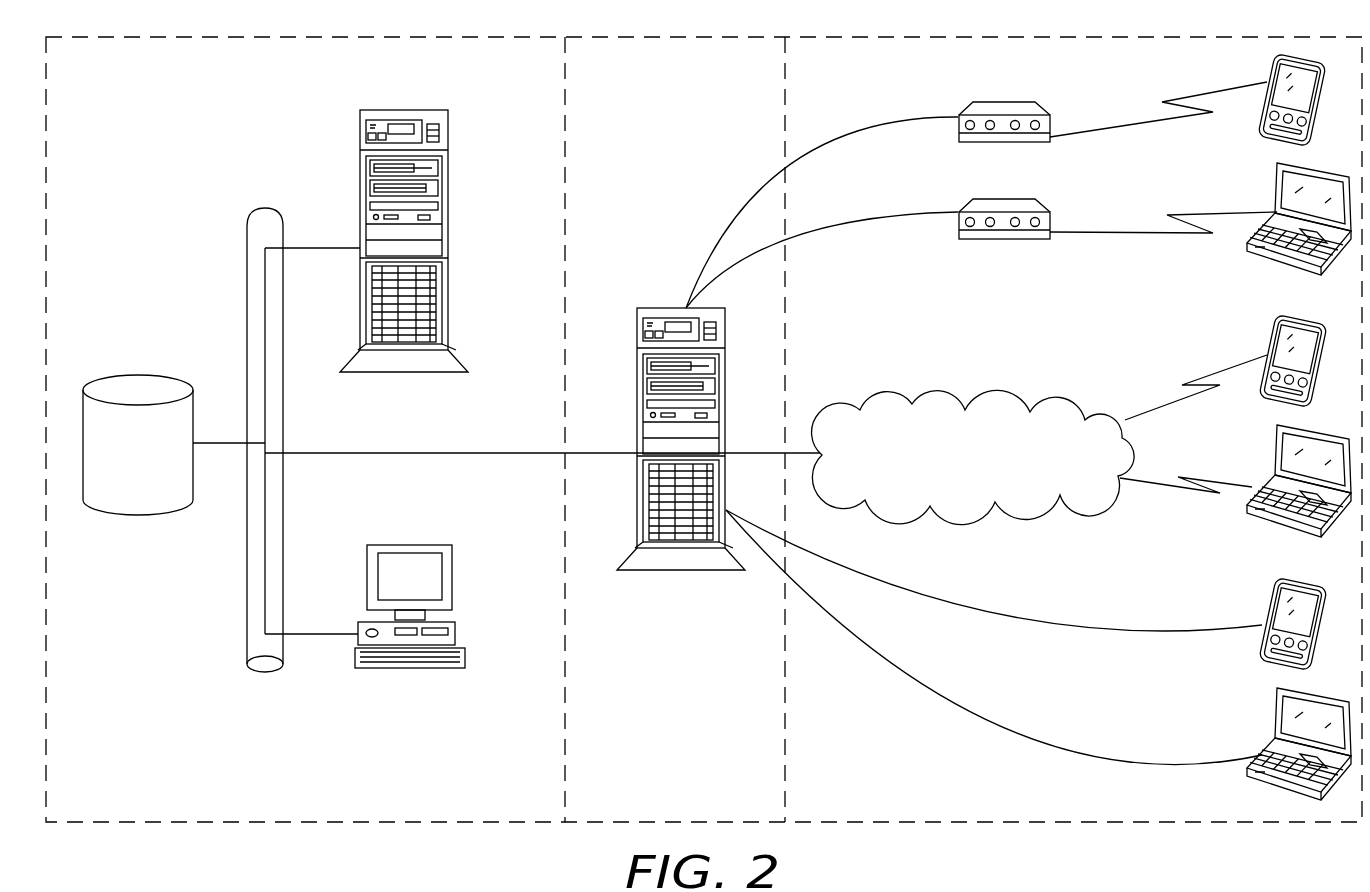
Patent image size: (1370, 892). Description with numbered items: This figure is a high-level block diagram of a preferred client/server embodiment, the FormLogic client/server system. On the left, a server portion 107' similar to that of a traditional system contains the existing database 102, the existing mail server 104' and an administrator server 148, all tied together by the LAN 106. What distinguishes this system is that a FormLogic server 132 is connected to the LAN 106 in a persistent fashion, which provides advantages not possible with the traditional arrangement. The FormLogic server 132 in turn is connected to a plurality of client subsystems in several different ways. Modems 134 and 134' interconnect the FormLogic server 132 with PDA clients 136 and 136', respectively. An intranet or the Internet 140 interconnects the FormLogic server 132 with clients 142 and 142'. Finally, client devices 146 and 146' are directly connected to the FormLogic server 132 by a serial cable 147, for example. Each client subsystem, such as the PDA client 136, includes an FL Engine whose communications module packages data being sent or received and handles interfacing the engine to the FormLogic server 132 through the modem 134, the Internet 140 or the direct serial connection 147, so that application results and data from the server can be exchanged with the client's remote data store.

The database 102 is at (160, 388).
The mail server 104' is at (400, 247).
The LAN 106 is at (247, 632).
The portion 107' is at (189, 751).
The FormLogic server 132 is at (636, 338).
The modem 134 is at (976, 183).
The modem 134' is at (981, 235).
The PDA client 136 is at (1243, 98).
The PDA client 136' is at (1271, 215).
The Internet 140 is at (945, 397).
The client 142 is at (1235, 479).
The client 142' is at (1226, 360).
The client device 146 is at (1270, 739).
The client device 146' is at (1262, 615).
The serial cable 147 is at (932, 597).
The administrator server 148 is at (418, 545).